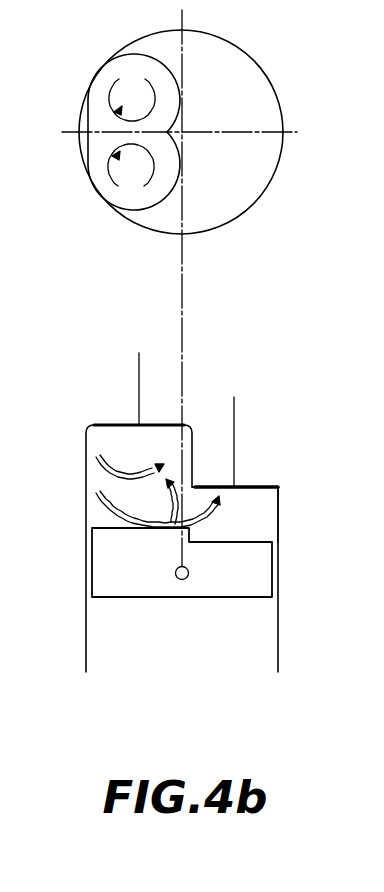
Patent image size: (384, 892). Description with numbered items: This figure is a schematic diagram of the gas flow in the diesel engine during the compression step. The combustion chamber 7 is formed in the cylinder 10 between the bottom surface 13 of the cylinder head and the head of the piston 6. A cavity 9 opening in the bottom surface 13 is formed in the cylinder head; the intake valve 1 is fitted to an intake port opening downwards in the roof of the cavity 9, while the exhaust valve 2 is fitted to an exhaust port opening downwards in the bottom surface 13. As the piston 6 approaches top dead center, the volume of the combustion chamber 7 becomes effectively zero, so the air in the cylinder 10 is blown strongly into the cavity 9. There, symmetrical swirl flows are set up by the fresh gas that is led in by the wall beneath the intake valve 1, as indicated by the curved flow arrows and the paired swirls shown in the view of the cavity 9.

The intake valve 1 is at (139, 355).
The exhaust valve 2 is at (234, 412).
The piston 6 is at (272, 573).
The combustion chamber 7 is at (252, 520).
The cavity 9 is at (93, 95).
The cylinder 10 is at (92, 517).
The bottom surface 13 is at (278, 490).